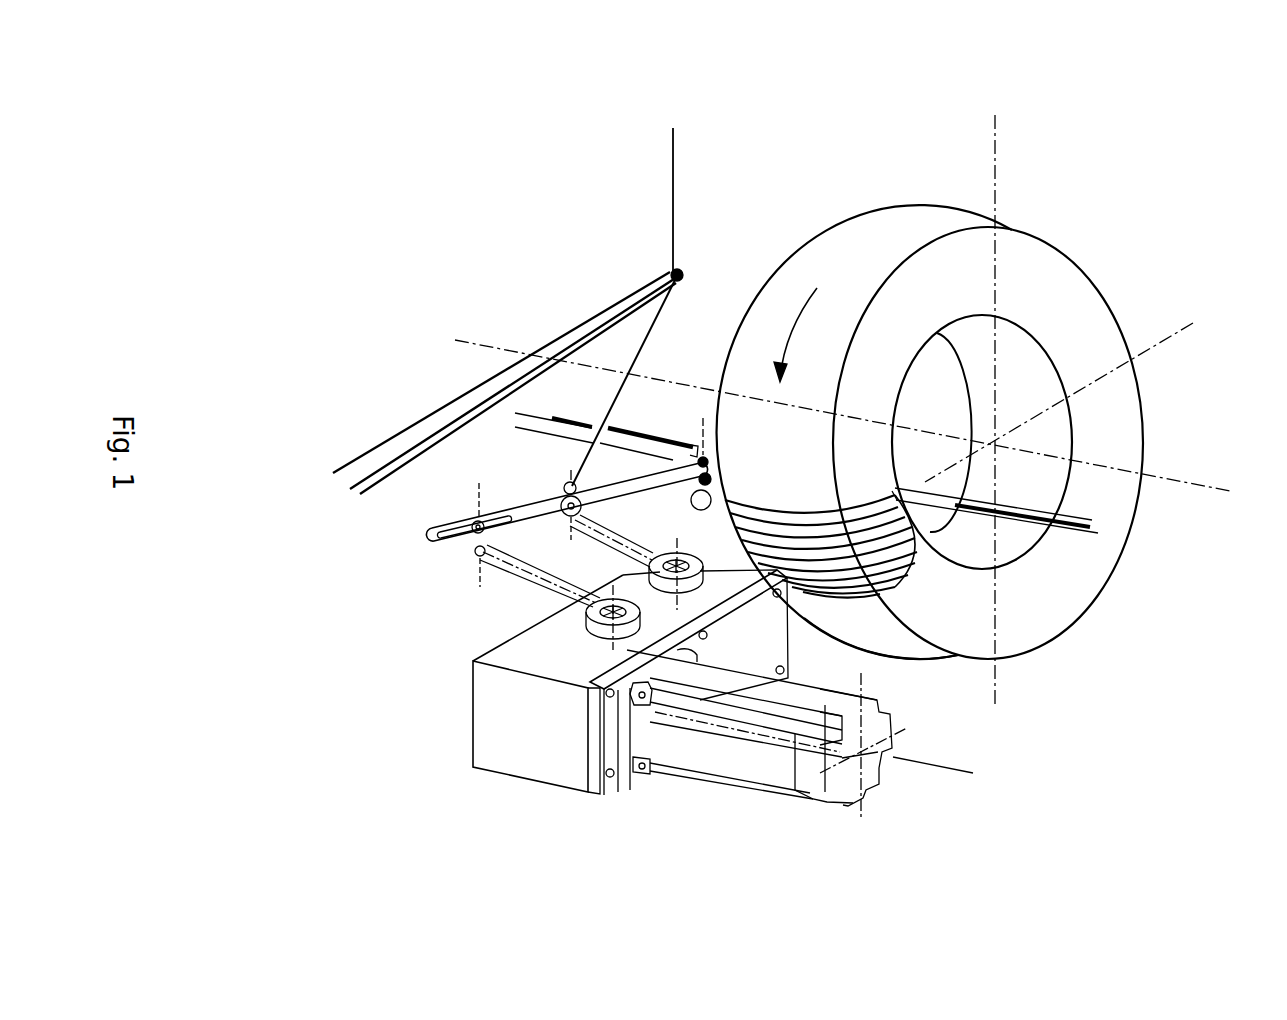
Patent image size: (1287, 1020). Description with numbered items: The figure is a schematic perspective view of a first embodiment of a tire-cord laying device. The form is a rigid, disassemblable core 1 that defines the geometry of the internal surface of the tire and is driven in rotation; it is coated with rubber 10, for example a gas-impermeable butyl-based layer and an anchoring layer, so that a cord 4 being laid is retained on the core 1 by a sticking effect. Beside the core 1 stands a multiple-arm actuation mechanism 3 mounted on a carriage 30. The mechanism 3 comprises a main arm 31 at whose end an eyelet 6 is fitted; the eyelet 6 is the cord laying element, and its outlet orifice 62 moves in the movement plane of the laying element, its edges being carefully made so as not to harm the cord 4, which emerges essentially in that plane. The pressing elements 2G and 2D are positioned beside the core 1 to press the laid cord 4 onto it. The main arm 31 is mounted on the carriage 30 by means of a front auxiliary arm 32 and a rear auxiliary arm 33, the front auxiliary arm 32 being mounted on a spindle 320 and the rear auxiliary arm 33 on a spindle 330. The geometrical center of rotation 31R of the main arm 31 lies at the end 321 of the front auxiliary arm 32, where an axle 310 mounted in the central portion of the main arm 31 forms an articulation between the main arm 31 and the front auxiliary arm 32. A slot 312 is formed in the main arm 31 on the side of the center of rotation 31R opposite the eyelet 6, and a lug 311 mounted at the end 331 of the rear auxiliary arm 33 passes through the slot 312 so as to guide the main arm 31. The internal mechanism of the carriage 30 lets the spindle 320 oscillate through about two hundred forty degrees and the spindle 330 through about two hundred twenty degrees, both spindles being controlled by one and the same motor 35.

The core 1 is at (1082, 303).
The rubber 10 is at (873, 610).
The pressing element 2D is at (1105, 525).
The pressing element 2G is at (643, 430).
The actuation mechanism 3 is at (383, 262).
The cord 4 is at (676, 165).
The eyelet 6 is at (727, 497).
The outlet orifice 62 is at (712, 499).
The carriage 30 is at (557, 658).
The main arm 31 is at (475, 515).
The geometrical center of rotation 31R is at (553, 503).
The axle 310 is at (566, 494).
The lug 311 is at (473, 521).
The slot 312 is at (437, 537).
The front auxiliary arm 32 is at (507, 560).
The spindle 320 is at (695, 600).
The end of the front auxiliary arm 321 is at (640, 520).
The rear auxiliary arm 33 is at (513, 572).
The spindle 330 is at (628, 635).
The end of the rear auxiliary arm 331 is at (474, 552).
The motor 35 is at (760, 760).